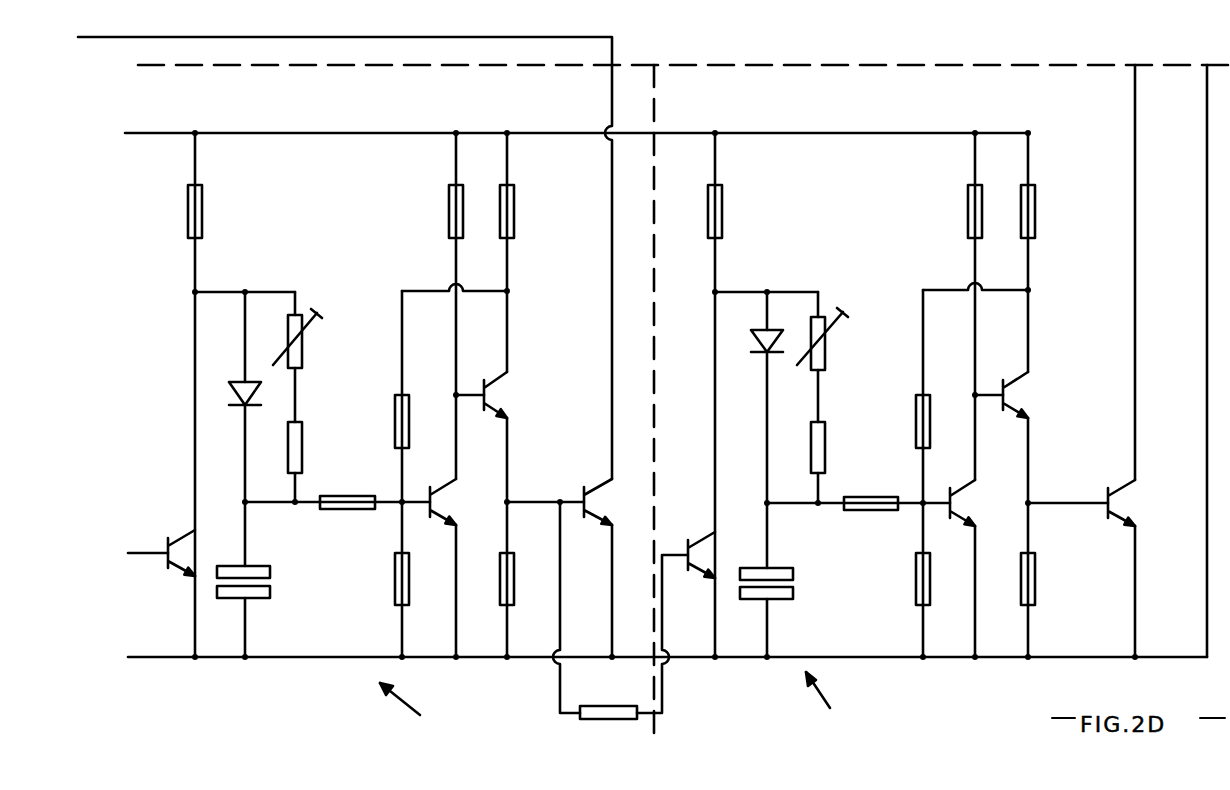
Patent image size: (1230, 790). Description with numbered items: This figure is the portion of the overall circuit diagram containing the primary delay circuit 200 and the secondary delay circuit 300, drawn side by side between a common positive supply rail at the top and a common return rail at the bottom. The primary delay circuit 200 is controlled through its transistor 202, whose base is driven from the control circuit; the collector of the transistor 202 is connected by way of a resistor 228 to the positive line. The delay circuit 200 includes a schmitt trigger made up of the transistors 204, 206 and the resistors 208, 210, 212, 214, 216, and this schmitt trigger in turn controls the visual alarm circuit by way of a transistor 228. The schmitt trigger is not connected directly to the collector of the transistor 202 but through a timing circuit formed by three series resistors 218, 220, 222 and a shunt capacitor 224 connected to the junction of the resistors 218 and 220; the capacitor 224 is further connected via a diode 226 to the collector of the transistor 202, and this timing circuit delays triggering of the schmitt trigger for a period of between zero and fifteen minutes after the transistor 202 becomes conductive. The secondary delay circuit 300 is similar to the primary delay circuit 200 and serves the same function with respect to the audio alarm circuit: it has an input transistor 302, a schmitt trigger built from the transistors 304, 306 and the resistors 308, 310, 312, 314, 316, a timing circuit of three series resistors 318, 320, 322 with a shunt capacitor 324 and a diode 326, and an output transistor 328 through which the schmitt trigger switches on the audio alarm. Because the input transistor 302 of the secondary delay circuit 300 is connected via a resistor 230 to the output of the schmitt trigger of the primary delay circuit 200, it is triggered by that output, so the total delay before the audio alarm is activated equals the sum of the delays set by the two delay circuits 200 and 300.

The primary delay circuit 200 is at (418, 707).
The transistor 202 is at (168, 542).
The transistor 204 is at (445, 493).
The transistor 206 is at (500, 390).
The resistor 208 is at (402, 600).
The resistor 210 is at (502, 603).
The resistor 212 is at (401, 400).
The resistor 214 is at (452, 197).
The resistor 216 is at (511, 210).
The series resistor 218 is at (332, 502).
The series resistor 220 is at (298, 432).
The series resistor 222 is at (298, 312).
The shunt capacitor 224 is at (253, 598).
The diode 226 is at (242, 381).
The resistor / transistor 228 is at (200, 193).
The resistor 230 is at (605, 716).
The secondary delay circuit 300 is at (834, 701).
The input transistor 302 is at (700, 545).
The transistor 304 is at (948, 492).
The transistor 306 is at (1020, 388).
The resistor 308 is at (922, 600).
The resistor 310 is at (1032, 603).
The resistor 312 is at (925, 402).
The resistor 314 is at (970, 197).
The resistor 316 is at (1030, 208).
The series resistor 318 is at (888, 508).
The series resistor 320 is at (822, 432).
The series resistor 322 is at (820, 313).
The shunt capacitor 324 is at (778, 599).
The diode 326 is at (758, 338).
The resistor / transistor 328 is at (720, 193).